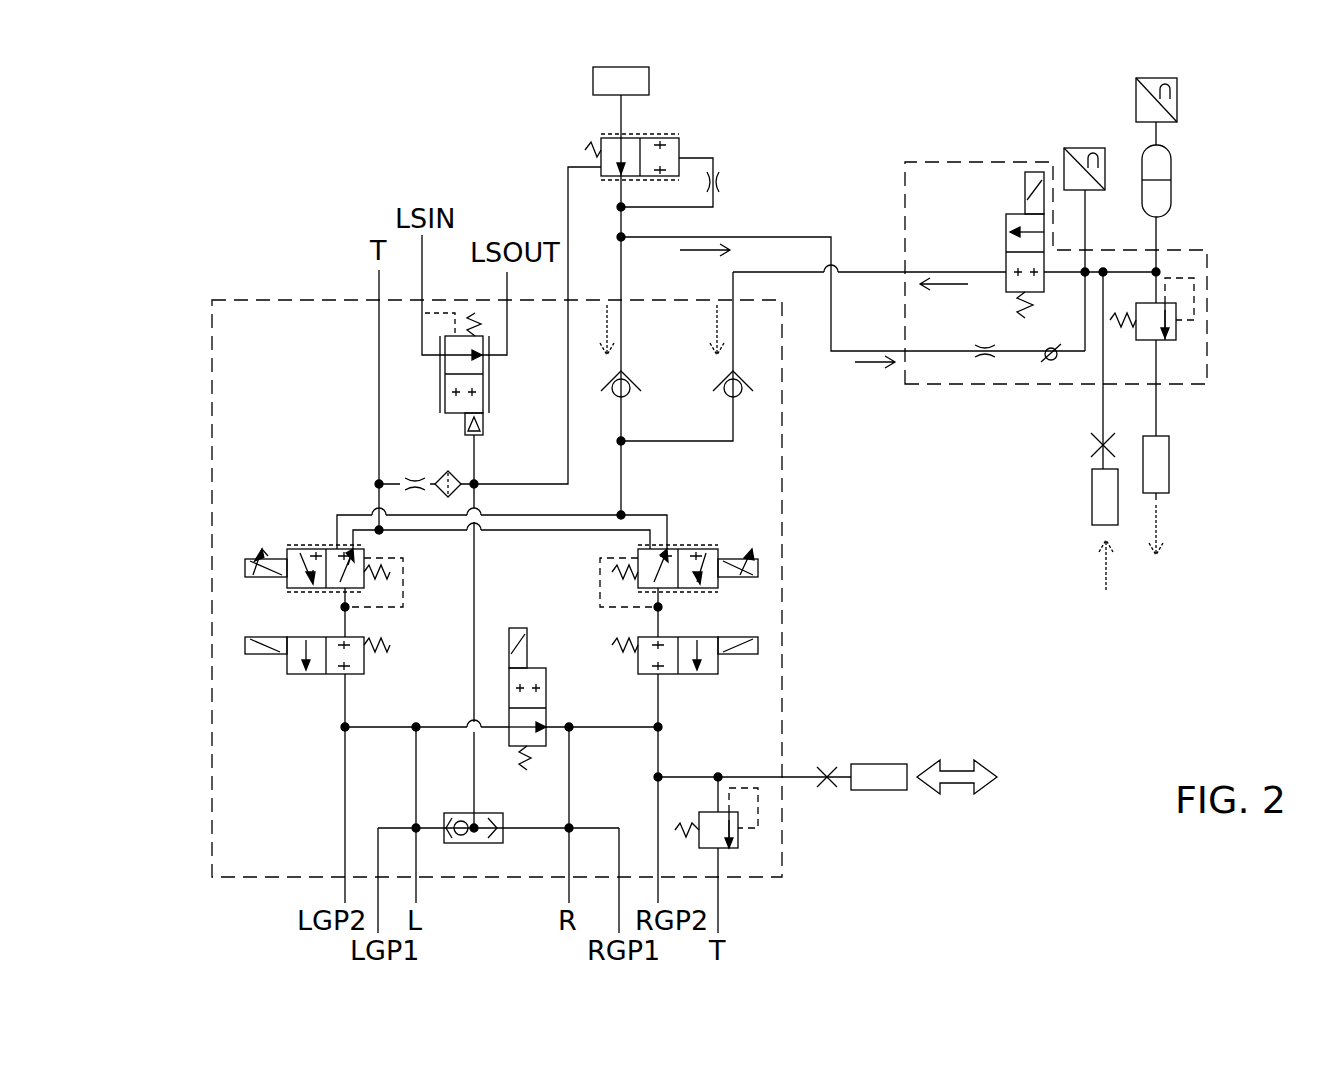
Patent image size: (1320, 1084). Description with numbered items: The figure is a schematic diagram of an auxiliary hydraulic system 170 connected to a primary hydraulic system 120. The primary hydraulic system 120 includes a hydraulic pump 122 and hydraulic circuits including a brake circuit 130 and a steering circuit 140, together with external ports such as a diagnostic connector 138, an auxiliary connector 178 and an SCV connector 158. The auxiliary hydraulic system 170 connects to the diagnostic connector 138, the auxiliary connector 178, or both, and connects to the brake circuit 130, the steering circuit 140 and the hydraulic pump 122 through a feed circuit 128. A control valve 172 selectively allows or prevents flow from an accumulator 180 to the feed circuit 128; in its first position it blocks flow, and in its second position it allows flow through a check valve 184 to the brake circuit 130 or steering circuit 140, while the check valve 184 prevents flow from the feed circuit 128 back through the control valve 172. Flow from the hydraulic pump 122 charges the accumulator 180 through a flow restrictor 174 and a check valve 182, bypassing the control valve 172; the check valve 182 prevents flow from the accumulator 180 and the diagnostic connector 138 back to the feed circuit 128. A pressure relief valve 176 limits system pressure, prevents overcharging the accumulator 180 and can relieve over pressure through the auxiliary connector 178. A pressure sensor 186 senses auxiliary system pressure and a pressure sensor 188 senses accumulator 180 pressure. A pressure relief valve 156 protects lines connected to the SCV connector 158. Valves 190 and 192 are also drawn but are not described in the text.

The primary hydraulic system 120 is at (235, 110).
The hydraulic pump 122 is at (605, 72).
The feed circuit 128 is at (790, 187).
The brake circuit 130 is at (228, 238).
The diagnostic connector 138 is at (1097, 497).
The steering circuit 140 is at (355, 205).
The pressure relief valve 156 is at (738, 838).
The SCV connector 158 is at (878, 770).
The auxiliary hydraulic system 170 is at (893, 92).
The control valve 172 is at (1006, 218).
The flow restrictor 174 is at (985, 355).
The pressure relief valve 176 is at (1176, 330).
The auxiliary connector 178 is at (1162, 470).
The accumulator 180 is at (1172, 195).
The check valve 182 is at (1049, 362).
The check valve 184 is at (743, 392).
The pressure sensor 186 is at (1082, 148).
The pressure sensor 188 is at (1178, 98).
The solenoid valve 190 is at (679, 137).
The check valve 192 is at (633, 385).